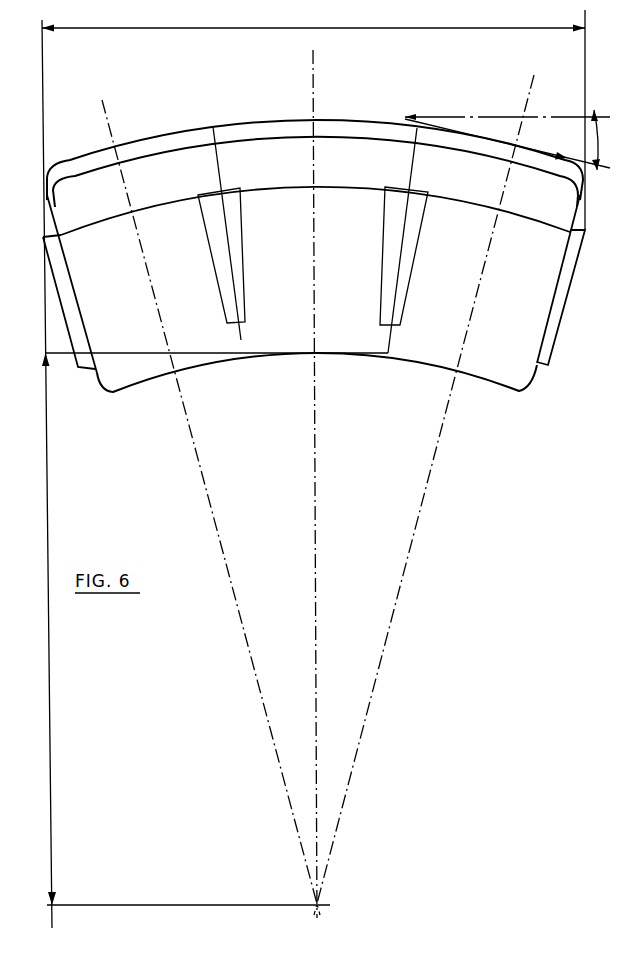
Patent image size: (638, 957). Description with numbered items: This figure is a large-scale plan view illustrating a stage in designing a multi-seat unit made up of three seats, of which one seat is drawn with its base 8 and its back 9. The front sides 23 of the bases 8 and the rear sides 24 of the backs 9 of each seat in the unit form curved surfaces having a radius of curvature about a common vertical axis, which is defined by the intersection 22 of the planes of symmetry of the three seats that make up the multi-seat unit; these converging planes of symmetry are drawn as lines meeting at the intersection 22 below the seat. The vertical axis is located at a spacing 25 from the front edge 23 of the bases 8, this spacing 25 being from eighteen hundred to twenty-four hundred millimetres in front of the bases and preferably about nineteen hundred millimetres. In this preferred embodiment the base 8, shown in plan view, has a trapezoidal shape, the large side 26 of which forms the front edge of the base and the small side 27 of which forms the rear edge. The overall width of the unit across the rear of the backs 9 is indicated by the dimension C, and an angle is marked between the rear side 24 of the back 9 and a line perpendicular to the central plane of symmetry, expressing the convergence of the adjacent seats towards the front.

The chord width dimension C is at (313, 19).
The base 8 is at (98, 297).
The back 9 is at (73, 210).
The intersection 22 is at (320, 903).
The front side 23 is at (140, 385).
The rear side 24 is at (77, 160).
The spacing 25 is at (52, 740).
The large side 26 is at (213, 367).
The small side 27 is at (162, 202).